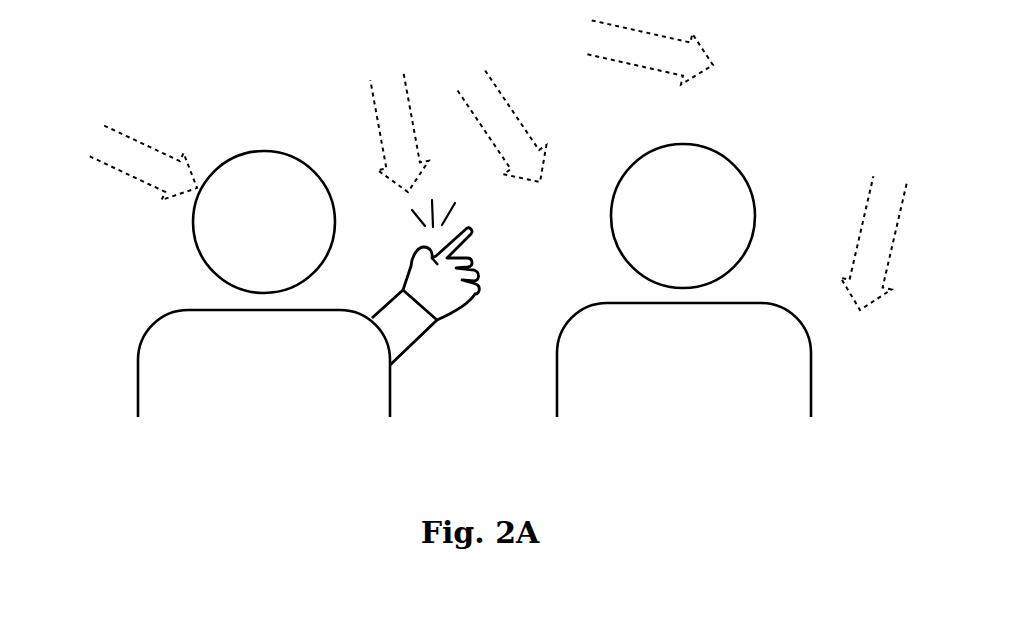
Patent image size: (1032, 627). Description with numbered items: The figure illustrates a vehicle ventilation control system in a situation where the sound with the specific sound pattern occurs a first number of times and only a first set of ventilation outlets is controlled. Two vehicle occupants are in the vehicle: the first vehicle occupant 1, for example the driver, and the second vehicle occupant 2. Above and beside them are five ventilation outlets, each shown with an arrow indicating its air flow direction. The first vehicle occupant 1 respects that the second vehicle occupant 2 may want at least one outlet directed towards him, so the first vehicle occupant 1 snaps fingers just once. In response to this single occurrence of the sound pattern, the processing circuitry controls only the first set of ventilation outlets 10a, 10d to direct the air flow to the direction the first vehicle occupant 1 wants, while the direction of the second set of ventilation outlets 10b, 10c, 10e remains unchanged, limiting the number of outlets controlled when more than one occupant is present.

The first vehicle occupant 1 is at (308, 284).
The second vehicle occupant 2 is at (684, 280).
The ventilation outlet 10a is at (388, 96).
The ventilation outlet 10b is at (488, 91).
The ventilation outlet 10c is at (611, 42).
The ventilation outlet 10d is at (107, 150).
The ventilation outlet 10e is at (885, 205).